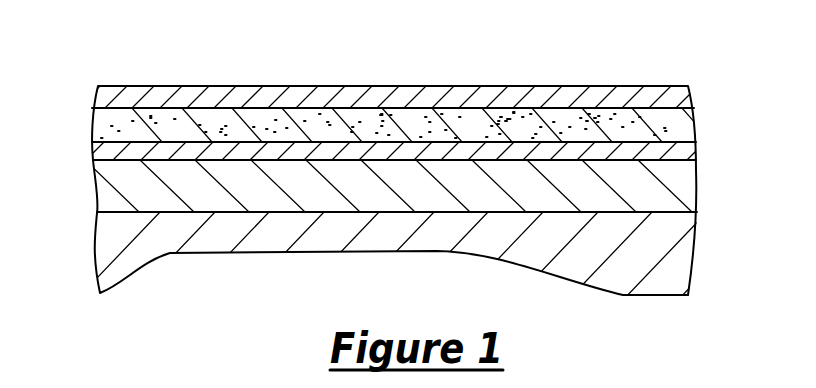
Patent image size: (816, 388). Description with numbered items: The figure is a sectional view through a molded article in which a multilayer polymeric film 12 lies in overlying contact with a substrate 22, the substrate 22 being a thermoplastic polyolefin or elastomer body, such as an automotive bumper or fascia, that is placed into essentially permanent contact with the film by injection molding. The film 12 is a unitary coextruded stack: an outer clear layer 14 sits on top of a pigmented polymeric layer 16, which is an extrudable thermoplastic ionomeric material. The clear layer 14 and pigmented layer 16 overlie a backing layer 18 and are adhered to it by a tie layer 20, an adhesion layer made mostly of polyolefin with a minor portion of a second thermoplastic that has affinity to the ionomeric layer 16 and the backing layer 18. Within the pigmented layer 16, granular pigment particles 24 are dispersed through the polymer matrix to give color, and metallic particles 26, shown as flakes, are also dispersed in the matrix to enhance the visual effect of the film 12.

The polymeric film 12 is at (80, 77).
The outer clear layer 14 is at (688, 88).
The polymeric layer 16 is at (670, 122).
The backing layer 18 is at (386, 197).
The tie layer 20 is at (683, 150).
The substrate 22 is at (386, 242).
The particles 24 is at (503, 120).
The metallic particles 26 is at (590, 117).